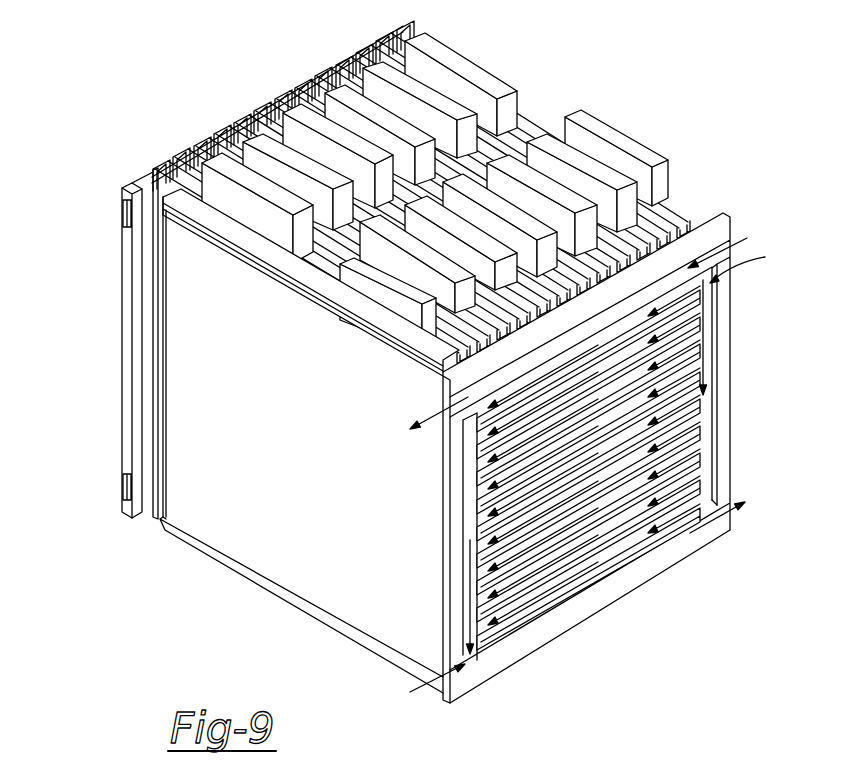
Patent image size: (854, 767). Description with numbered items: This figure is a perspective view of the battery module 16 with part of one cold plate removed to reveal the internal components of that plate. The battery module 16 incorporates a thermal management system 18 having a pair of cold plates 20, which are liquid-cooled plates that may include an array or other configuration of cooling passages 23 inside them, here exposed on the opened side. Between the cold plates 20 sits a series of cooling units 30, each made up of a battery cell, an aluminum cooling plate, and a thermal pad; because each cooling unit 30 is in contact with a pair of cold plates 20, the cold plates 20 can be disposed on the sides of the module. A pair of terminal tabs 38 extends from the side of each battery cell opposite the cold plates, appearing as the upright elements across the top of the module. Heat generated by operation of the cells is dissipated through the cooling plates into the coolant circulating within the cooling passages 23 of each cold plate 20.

The battery module 16 is at (112, 207).
The thermal management system 18 is at (433, 623).
The cold plates 20 is at (121, 381).
The cooling passages 23 is at (745, 260).
The cooling units 30 is at (160, 196).
The terminal tabs 38 is at (250, 142).